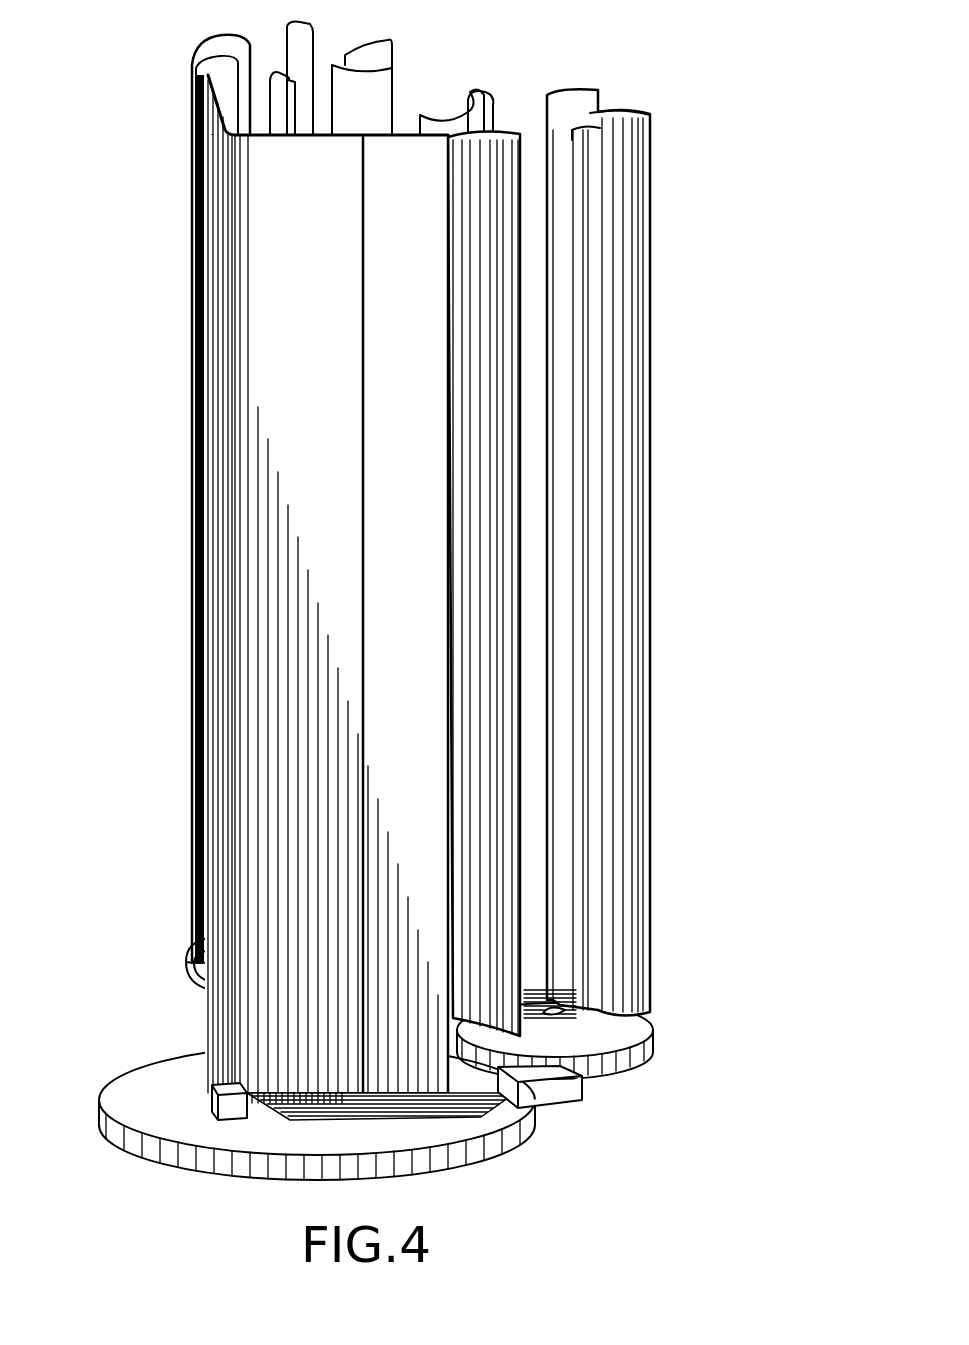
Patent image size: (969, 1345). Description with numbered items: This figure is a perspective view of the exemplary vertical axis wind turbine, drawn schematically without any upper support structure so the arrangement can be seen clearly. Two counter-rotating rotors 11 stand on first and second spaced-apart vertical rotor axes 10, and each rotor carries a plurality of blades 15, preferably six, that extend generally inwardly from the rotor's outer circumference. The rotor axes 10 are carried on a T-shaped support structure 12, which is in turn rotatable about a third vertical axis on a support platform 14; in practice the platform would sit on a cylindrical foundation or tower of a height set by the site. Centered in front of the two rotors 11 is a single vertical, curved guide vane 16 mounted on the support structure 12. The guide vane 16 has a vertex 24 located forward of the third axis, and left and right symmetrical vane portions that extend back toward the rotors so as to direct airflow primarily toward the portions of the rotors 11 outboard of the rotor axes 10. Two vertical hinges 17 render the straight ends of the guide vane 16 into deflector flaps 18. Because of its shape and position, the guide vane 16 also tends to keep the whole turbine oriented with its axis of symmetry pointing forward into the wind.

The rotor axis 10 is at (557, 1013).
The rotor 11 is at (618, 562).
The support structure 12 is at (577, 1097).
The support platform 14 is at (160, 1087).
The blade 15 is at (632, 342).
The guide vane 16 is at (267, 772).
The vertical hinge 17 is at (360, 615).
The deflector flap 18 is at (382, 537).
The vertex 24 is at (233, 867).